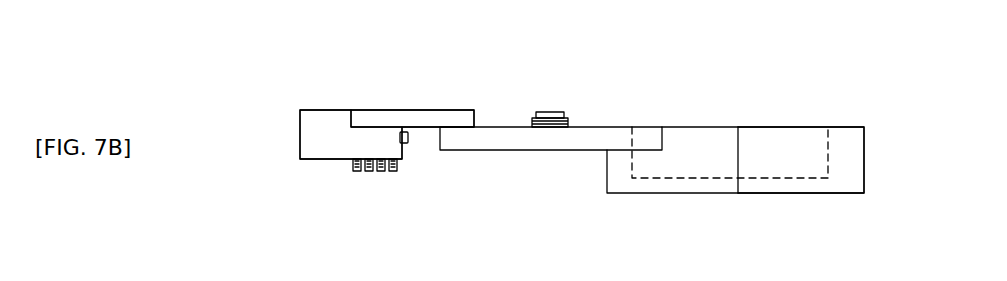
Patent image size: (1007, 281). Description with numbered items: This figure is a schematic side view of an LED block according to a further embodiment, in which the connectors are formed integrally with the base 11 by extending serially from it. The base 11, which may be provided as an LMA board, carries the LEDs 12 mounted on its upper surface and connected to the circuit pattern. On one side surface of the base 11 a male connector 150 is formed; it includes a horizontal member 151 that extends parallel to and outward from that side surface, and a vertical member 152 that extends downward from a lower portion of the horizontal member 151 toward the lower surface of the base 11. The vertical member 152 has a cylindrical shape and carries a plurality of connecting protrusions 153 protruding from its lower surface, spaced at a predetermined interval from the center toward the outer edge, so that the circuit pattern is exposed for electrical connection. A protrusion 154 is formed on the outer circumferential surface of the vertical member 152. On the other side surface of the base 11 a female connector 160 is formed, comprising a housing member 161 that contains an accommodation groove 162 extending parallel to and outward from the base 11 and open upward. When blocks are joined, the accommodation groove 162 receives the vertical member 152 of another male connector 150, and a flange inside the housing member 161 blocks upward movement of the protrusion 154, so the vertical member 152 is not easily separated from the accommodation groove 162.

The base 11 is at (488, 135).
The LEDs 12 is at (548, 110).
The male connector 150 is at (304, 94).
The horizontal member 151 is at (373, 120).
The vertical member 152 is at (300, 142).
The connecting protrusions 153 is at (368, 172).
The protrusion 154 is at (409, 140).
The female connector 160 is at (826, 208).
The housing member 161 is at (864, 148).
The accommodation groove 162 is at (791, 148).